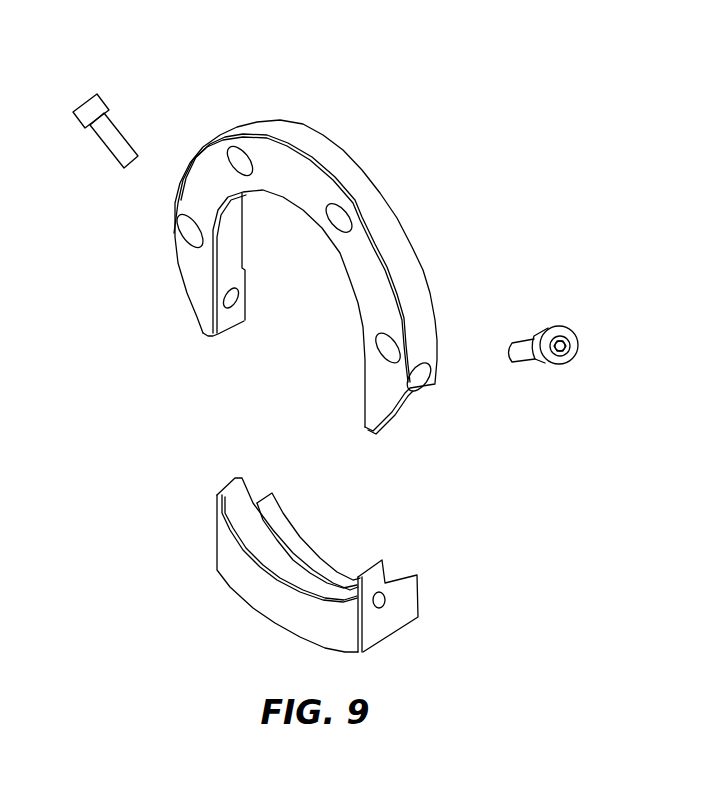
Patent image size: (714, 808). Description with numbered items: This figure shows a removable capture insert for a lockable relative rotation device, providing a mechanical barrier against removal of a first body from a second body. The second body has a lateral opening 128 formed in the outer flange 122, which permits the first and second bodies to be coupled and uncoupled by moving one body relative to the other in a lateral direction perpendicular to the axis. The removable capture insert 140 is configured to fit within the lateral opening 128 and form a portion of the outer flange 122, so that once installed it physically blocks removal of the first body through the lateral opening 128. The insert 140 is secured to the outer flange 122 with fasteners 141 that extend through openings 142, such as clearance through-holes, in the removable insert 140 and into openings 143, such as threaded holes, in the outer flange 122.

The outer flange 122 is at (318, 290).
The lateral opening 128 is at (298, 386).
The removable capture insert 140 is at (313, 577).
The fasteners 141 is at (113, 132).
The openings 142 is at (232, 316).
The openings 143 is at (388, 609).